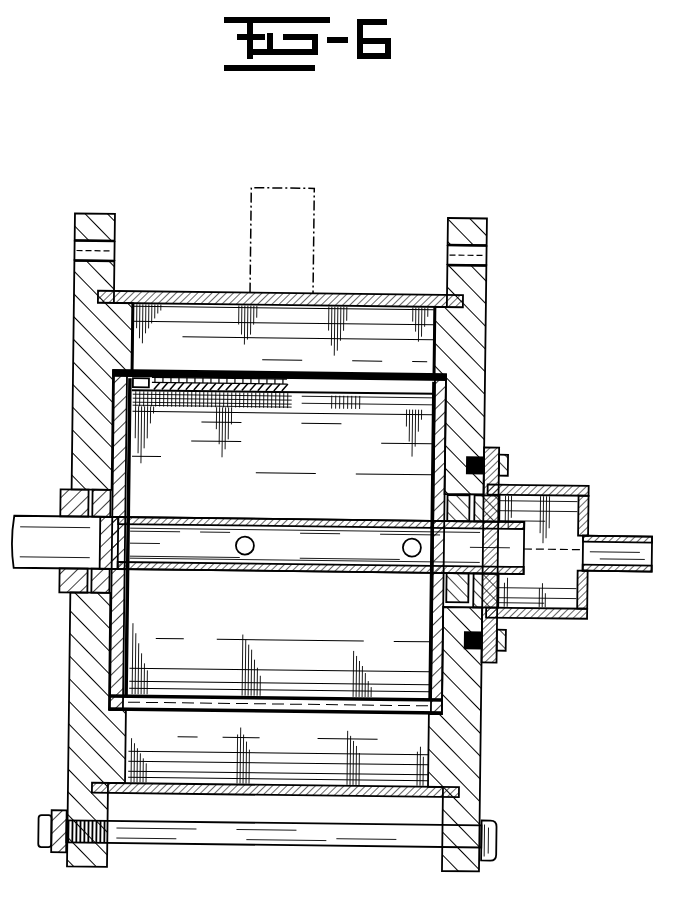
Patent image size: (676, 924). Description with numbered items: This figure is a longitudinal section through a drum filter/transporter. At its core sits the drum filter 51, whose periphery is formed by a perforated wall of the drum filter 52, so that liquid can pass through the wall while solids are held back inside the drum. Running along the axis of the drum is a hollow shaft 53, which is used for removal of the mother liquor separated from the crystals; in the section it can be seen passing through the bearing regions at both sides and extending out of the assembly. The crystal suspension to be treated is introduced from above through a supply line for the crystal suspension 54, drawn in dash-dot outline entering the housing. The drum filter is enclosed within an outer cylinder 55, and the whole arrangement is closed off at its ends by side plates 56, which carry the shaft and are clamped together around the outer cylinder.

The drum filter 51 is at (277, 542).
The perforated wall of the drum filter 52 is at (350, 380).
The hollow shaft 53 is at (208, 528).
The supply line for the crystal suspension 54 is at (304, 241).
The outer cylinder 55 is at (290, 795).
The side plates 56 is at (90, 658).